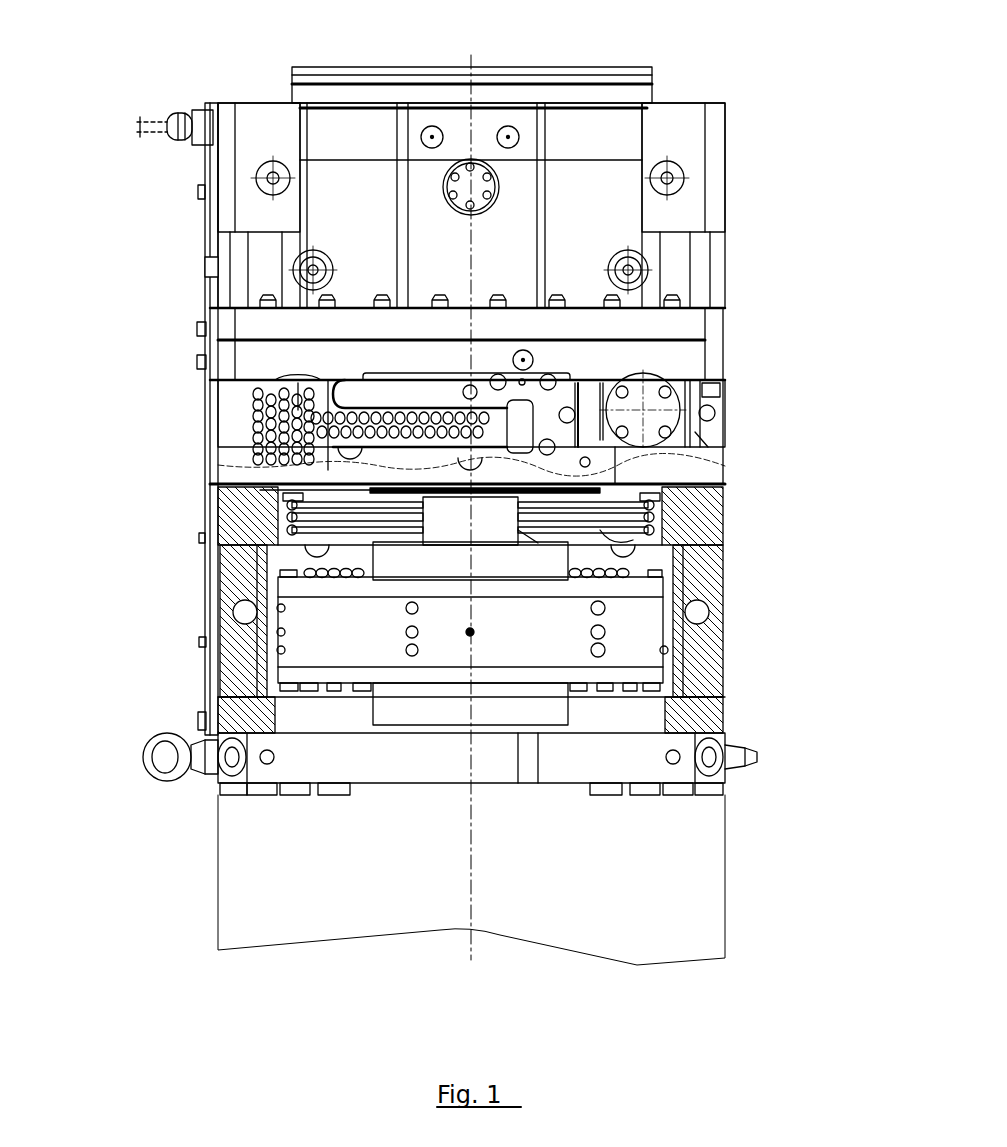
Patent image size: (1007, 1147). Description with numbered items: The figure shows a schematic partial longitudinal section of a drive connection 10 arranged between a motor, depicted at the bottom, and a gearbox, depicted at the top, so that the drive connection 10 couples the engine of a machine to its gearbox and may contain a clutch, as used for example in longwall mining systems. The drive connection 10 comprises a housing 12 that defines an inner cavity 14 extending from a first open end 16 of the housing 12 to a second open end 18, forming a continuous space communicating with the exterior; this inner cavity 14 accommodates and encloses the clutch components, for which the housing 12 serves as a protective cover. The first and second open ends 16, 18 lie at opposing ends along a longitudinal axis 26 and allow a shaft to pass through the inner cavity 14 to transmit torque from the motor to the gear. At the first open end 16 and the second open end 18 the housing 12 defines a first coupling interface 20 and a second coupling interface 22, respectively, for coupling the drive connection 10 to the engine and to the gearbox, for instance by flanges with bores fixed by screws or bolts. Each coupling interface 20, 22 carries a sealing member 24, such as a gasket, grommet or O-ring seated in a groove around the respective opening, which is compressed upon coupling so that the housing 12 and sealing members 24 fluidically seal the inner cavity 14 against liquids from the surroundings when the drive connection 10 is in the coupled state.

The drive connection 10 is at (450, 487).
The housing 12 is at (741, 652).
The inner cavity 14 is at (586, 546).
The first open end 16 is at (578, 745).
The second open end 18 is at (400, 477).
The first coupling interface 20 is at (186, 700).
The second coupling interface 22 is at (748, 505).
The sealing member 24 is at (194, 490).
The longitudinal axis 26 is at (481, 51).